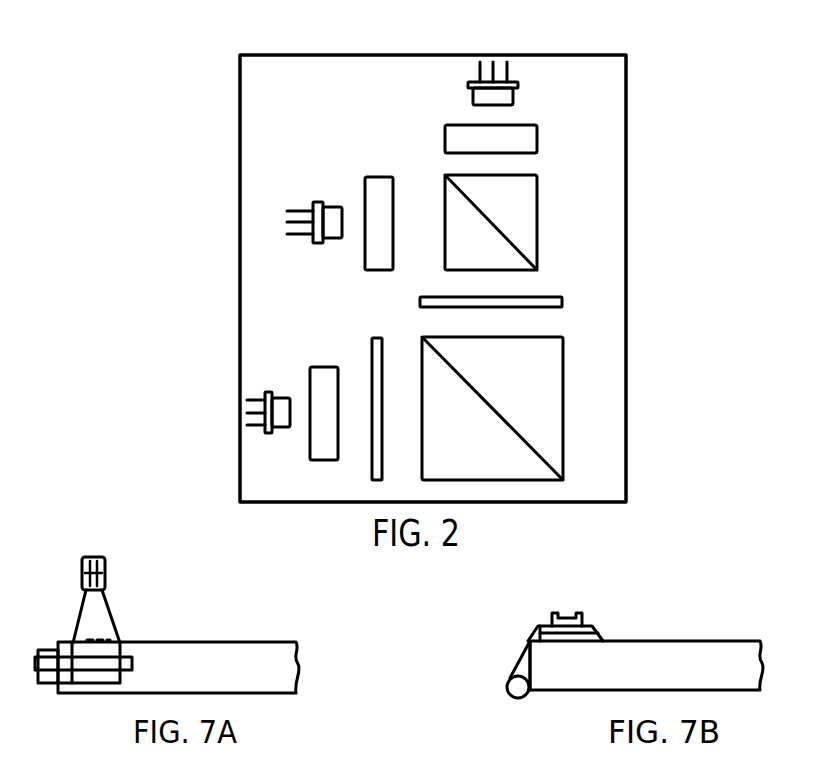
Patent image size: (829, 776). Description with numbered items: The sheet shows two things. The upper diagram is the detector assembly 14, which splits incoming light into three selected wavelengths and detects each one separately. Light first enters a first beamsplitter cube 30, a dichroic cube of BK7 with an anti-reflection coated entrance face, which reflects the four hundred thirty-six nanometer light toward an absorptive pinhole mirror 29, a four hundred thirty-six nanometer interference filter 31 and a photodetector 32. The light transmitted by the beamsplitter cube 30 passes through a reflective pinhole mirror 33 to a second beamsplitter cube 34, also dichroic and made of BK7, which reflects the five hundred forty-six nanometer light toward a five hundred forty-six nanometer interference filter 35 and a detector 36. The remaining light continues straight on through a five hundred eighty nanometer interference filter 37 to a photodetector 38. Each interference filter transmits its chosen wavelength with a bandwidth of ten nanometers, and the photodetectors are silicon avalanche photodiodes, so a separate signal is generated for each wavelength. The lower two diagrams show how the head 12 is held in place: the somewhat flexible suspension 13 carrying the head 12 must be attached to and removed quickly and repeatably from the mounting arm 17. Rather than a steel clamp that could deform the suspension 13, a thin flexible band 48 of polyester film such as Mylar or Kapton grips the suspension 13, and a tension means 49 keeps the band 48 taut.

In FIG. 2, the detector assembly 14 is at (228, 172).
In FIG. 2, the photodetector 38 is at (518, 95).
In FIG. 2, the 580 nm interference filter 37 is at (537, 129).
In FIG. 2, the beamsplitter cube 34 is at (537, 209).
In FIG. 2, the reflective pinhole mirror 33 is at (549, 296).
In FIG. 2, the first beamsplitter cube 30 is at (563, 395).
In FIG. 2, the detector 36 is at (320, 201).
In FIG. 2, the 546 nm interference filter 35 is at (375, 177).
In FIG. 2, the photodetector 32 is at (282, 390).
In FIG. 2, the 436 nm interference filter 31 is at (308, 443).
In FIG. 2, the absorptive pinhole mirror 29 is at (372, 348).
In FIG. 7A, the head 12 is at (106, 571).
In FIG. 7B, the head 12 is at (578, 616).
In FIG. 7A, the suspension 13 is at (105, 612).
In FIG. 7A, the mounting arm 17 is at (208, 641).
In FIG. 7B, the mounting arm 17 is at (678, 641).
In FIG. 7A, the flexible band 48 is at (95, 660).
In FIG. 7B, the flexible band 48 is at (522, 650).
In FIG. 7B, the tension means 49 is at (515, 698).